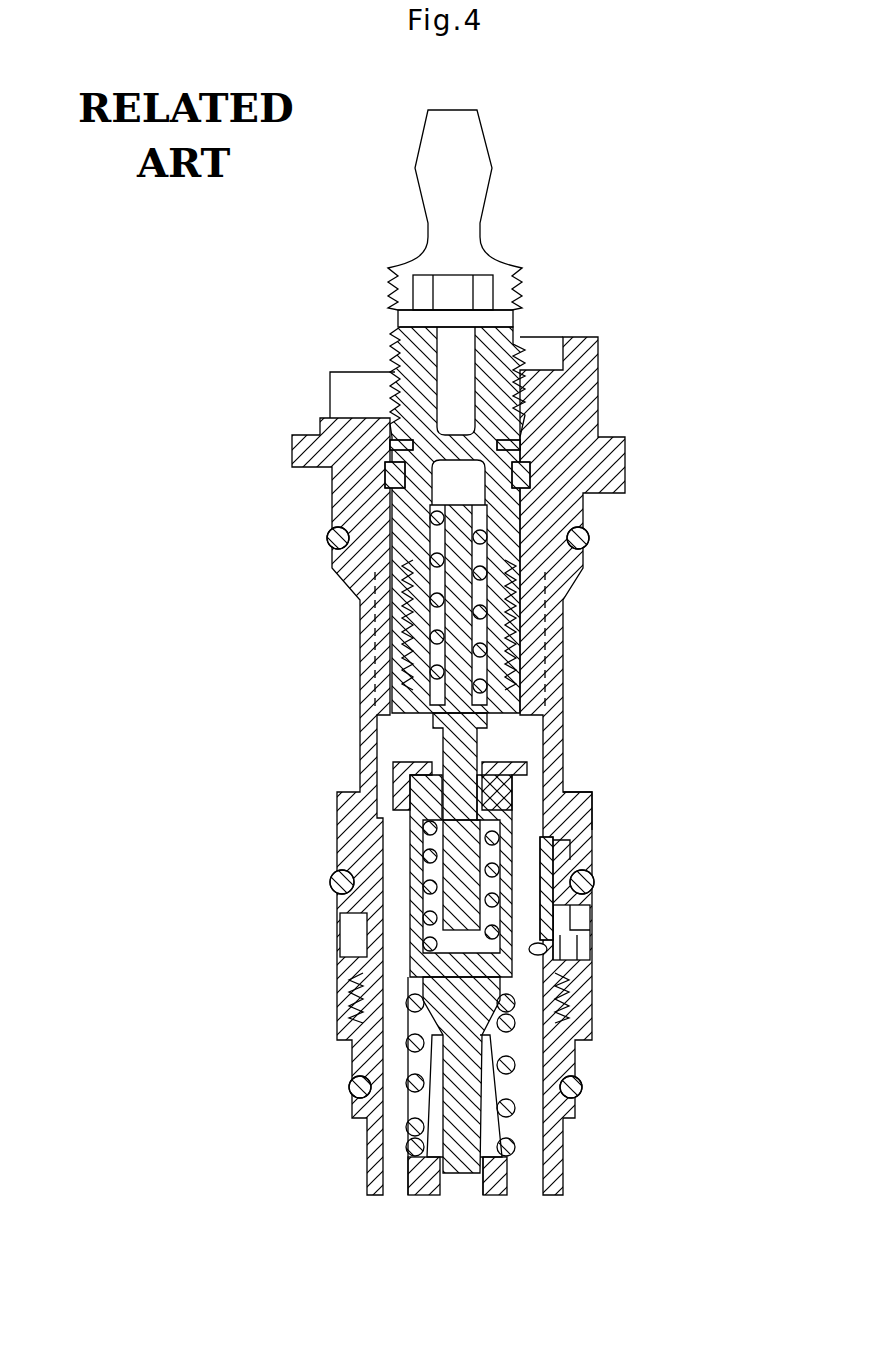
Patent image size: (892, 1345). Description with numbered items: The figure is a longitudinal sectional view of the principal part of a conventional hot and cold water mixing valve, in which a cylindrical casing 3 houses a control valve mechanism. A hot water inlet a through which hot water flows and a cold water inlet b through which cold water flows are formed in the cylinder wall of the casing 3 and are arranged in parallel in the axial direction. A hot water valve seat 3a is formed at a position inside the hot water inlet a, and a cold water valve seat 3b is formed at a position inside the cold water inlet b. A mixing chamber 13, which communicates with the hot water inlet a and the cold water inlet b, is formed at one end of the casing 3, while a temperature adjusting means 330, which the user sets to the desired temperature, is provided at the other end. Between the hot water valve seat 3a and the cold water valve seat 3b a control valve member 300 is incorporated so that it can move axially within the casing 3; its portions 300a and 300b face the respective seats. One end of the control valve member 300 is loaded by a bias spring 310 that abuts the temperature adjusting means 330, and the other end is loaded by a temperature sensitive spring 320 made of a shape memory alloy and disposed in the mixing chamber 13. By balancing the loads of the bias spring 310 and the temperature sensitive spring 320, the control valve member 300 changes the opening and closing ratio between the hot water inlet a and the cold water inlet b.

The cylindrical casing 3 is at (607, 337).
The temperature adjusting means 330 is at (427, 358).
The control valve member 300 is at (528, 763).
The bias spring 310 is at (423, 864).
The mixing chamber 13 is at (403, 1107).
The temperature sensitive spring 320 is at (517, 1110).
The hot water valve seat 3a is at (560, 790).
The seal sleeve of valve member 300a is at (557, 832).
The hot water inlet a is at (570, 840).
The lip of valve member 300b is at (548, 947).
The cold water inlet b is at (577, 945).
The cold water valve seat 3b is at (557, 963).